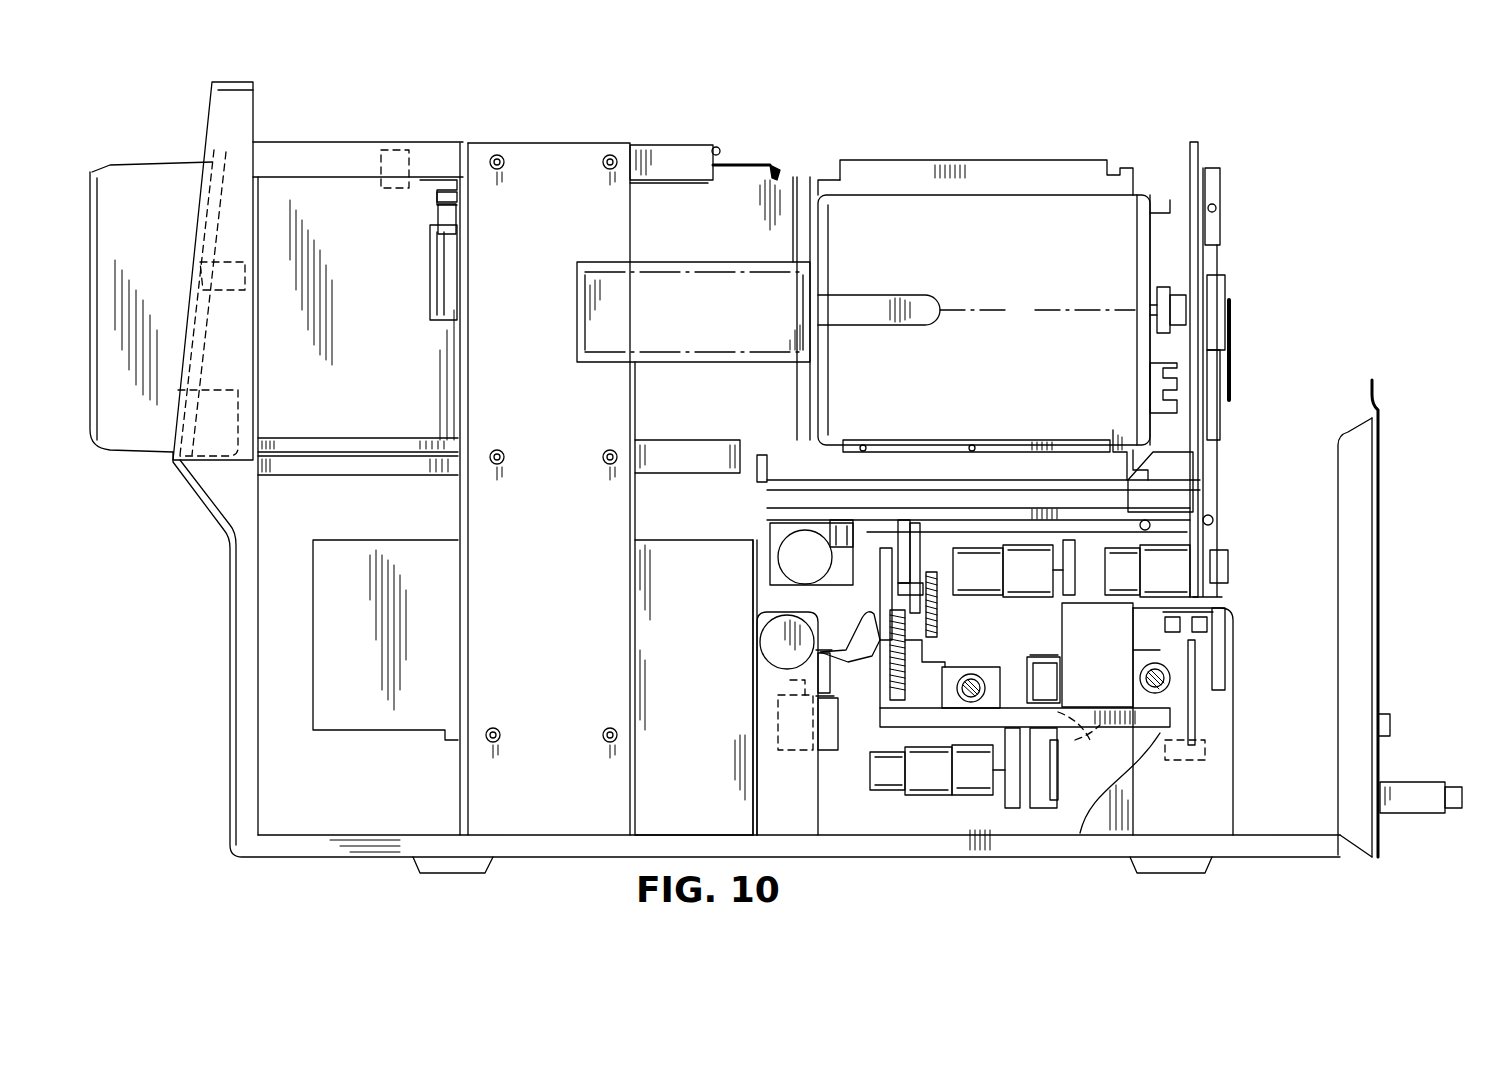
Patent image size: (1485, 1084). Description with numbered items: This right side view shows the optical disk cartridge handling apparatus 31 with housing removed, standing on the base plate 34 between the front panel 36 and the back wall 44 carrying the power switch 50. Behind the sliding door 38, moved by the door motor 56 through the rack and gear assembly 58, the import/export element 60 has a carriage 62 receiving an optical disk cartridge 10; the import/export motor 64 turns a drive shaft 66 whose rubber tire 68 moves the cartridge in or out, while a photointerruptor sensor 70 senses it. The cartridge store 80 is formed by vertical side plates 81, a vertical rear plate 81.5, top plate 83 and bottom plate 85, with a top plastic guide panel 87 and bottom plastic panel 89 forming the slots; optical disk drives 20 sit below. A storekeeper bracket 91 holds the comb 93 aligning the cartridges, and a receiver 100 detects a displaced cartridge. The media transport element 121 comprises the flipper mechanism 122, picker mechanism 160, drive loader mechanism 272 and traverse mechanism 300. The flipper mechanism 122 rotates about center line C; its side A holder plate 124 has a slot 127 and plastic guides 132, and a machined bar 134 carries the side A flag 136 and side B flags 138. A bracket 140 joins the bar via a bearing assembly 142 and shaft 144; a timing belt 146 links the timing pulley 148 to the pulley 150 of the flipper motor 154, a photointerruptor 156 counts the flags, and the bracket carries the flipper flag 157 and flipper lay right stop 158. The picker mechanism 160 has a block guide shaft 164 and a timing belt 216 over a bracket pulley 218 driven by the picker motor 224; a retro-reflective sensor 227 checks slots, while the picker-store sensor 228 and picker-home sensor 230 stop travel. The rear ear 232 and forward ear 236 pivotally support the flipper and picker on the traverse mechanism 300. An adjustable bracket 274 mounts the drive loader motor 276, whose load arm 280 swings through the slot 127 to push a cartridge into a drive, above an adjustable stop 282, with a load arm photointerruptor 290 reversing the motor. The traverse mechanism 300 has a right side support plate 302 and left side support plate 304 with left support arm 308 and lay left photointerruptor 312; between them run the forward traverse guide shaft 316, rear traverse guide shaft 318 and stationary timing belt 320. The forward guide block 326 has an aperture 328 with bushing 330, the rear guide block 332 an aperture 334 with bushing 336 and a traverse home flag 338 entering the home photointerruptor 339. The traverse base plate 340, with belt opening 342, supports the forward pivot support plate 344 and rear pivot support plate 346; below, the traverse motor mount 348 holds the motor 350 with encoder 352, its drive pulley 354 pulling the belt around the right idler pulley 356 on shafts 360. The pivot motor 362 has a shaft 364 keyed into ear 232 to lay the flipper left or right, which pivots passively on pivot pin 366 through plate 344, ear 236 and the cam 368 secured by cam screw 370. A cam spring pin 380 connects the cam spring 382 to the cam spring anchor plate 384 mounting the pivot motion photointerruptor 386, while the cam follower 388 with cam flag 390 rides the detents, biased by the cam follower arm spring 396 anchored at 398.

The optical disk cartridge 10 is at (138, 168).
The optical disk drive 20 is at (388, 642).
The optical disk cartridge handling apparatus 31 is at (412, 98).
The base plate 34 is at (290, 838).
The front panel 36 is at (232, 610).
The sliding door 38 is at (215, 150).
The back wall 44 is at (1382, 523).
The power switch 50 is at (1390, 720).
The door motor 56 is at (180, 410).
The rack and gear assembly 58 is at (205, 265).
The import/export element 60 is at (276, 132).
The carriage 62 is at (325, 145).
The import/export motor 64 is at (430, 250).
The rotatable drive shaft 66 is at (437, 200).
The rubber tire 68 is at (428, 180).
The photointerruptor sensor 70 is at (382, 150).
The cartridge store 80 is at (540, 143).
The vertical side plates 81 is at (582, 143).
The vertical rear plate 81.5 is at (468, 777).
The top plate 83 is at (665, 150).
The bottom plate 85 is at (307, 470).
The top plastic guide panel 87 is at (675, 186).
The bottom plastic panel 89 is at (675, 440).
The storekeeper bracket 91 is at (718, 150).
The comb 93 is at (778, 168).
The receiver 100 is at (800, 300).
The media transport element 121 is at (1268, 332).
The flipper mechanism 122 is at (1078, 249).
The side A cartridge holder plate 124 is at (938, 254).
The slot 127 is at (862, 300).
The plastic guides 132 is at (1008, 160).
The machined bar 134 is at (1148, 195).
The side A flag 136 is at (1168, 212).
The side B flags 138 is at (1150, 395).
The bracket 140 is at (1205, 232).
The bearing assembly 142 is at (1185, 297).
The shaft 144 is at (1232, 313).
The timing belt 146 is at (1222, 442).
The timing pulley 148 is at (1228, 287).
The pulley 150 is at (1230, 555).
The flipper motor 154 is at (1185, 582).
The photointerruptor 156 is at (1150, 410).
The flipper flag 157 is at (1198, 150).
The flipper lay right stop 158 is at (1220, 200).
The picker mechanism 160 is at (1115, 455).
The block guide shaft 164 is at (775, 493).
The timing belt 216 is at (1188, 500).
The bracket pulley 218 is at (1212, 520).
The picker motor 224 is at (824, 569).
The retro-reflective optical sensor 227 is at (757, 477).
The picker-store optical sensor 228 is at (780, 545).
The picker-home optical sensor 230 is at (1137, 520).
The rear picker bracket pivot support ear 232 is at (1090, 520).
The forward picker bracket pivot support ear 236 is at (900, 520).
The drive loader mechanism 272 is at (765, 655).
The adjustable bracket 274 is at (762, 778).
The drive loader motor 276 is at (770, 637).
The load arm 280 is at (835, 632).
The adjustable stop 282 is at (830, 660).
The load arm photointerruptor 290 is at (778, 690).
The traverse mechanism 300 is at (975, 825).
The right side support plate 302 is at (1205, 835).
The left side support plate 304 is at (1233, 660).
The left flipper mechanism support arm 308 is at (1225, 635).
The traverse lay left photointerruptor 312 is at (1200, 608).
The forward traverse guide shaft 316 is at (990, 680).
The rear traverse guide shaft 318 is at (1225, 705).
The stationary timing belt 320 is at (1043, 808).
The forward traverse guide block 326 is at (1030, 690).
The aperture 328 is at (958, 690).
The bushing 330 is at (928, 712).
The rear traverse guide block 332 is at (1165, 690).
The aperture 334 is at (1162, 740).
The bushing 336 is at (1175, 735).
The traverse home flag 338 is at (1225, 690).
The traverse home photointerruptor 339 is at (1210, 760).
The traverse base plate 340 is at (1092, 730).
The timing belt opening 342 is at (1085, 750).
The forward traverse pivot support plate 344 is at (886, 548).
The rear traverse pivot support plate 346 is at (1075, 620).
The traverse motor mount 348 is at (1015, 808).
The traverse motor 350 is at (990, 779).
The encoder 352 is at (890, 790).
The drive pulley 354 is at (1060, 775).
The right idler pulley 356 is at (1058, 660).
The shafts 360 is at (1062, 685).
The traverse pivot motor 362 is at (1002, 582).
The shaft 364 is at (1080, 580).
The pivot pin 366 is at (878, 590).
The cam 368 is at (904, 520).
The cam screw 370 is at (918, 530).
The cam spring pin 380 is at (933, 572).
The cam spring 382 is at (937, 590).
The cam spring anchor plate 384 is at (960, 665).
The traverse pivot motion photointerruptor 386 is at (1030, 657).
The cam follower 388 is at (892, 660).
The cam flag 390 is at (937, 620).
The cam follower arm spring 396 is at (924, 668).
The anchor 398 is at (895, 705).